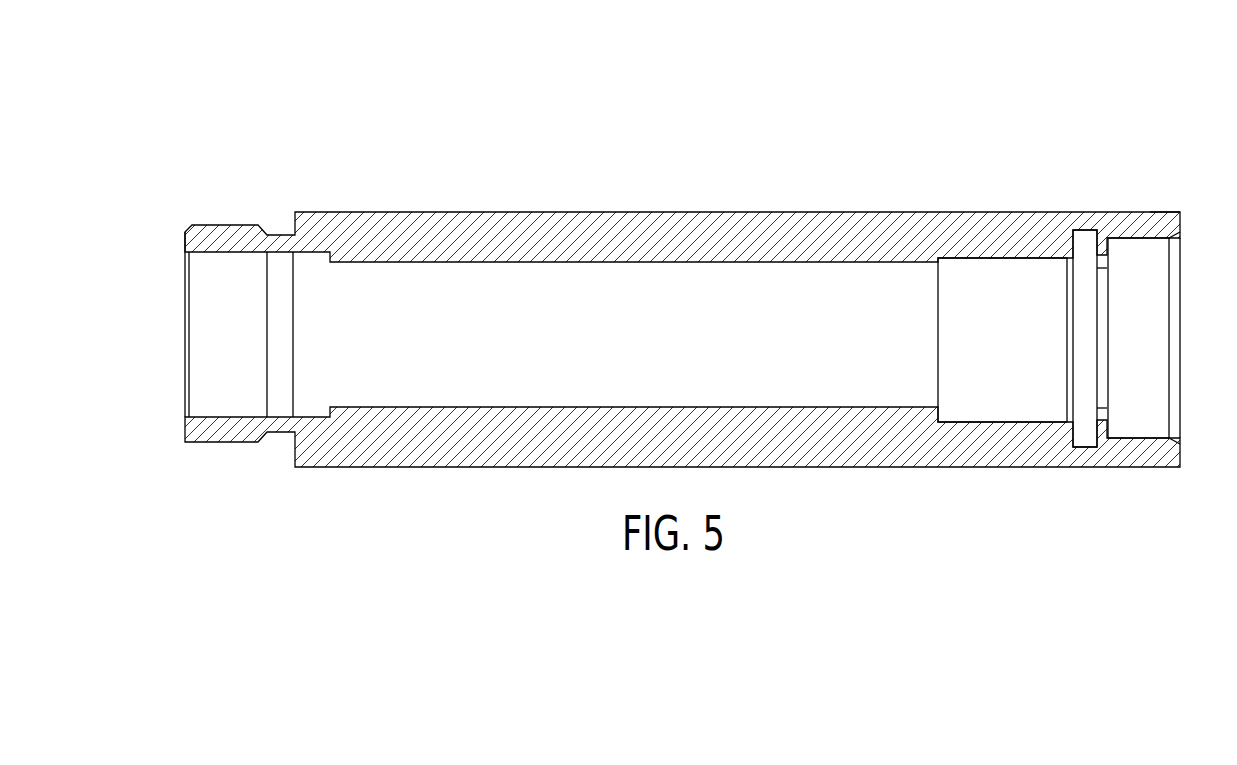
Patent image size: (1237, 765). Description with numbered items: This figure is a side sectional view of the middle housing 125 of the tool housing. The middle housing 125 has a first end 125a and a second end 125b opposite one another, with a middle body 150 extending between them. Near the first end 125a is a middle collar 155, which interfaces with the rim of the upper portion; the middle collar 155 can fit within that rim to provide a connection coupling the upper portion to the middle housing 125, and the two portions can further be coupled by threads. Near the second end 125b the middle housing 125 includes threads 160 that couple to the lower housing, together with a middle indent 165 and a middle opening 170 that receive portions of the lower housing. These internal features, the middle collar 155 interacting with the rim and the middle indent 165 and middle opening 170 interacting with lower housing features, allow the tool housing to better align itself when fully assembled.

The middle housing 125 is at (700, 275).
The first end 125a is at (197, 240).
The second end 125b is at (1141, 221).
The middle body 150 is at (567, 222).
The middle collar 155 is at (273, 432).
The threads 160 is at (1165, 390).
The middle indent 165 is at (1087, 343).
The middle opening 170 is at (937, 355).